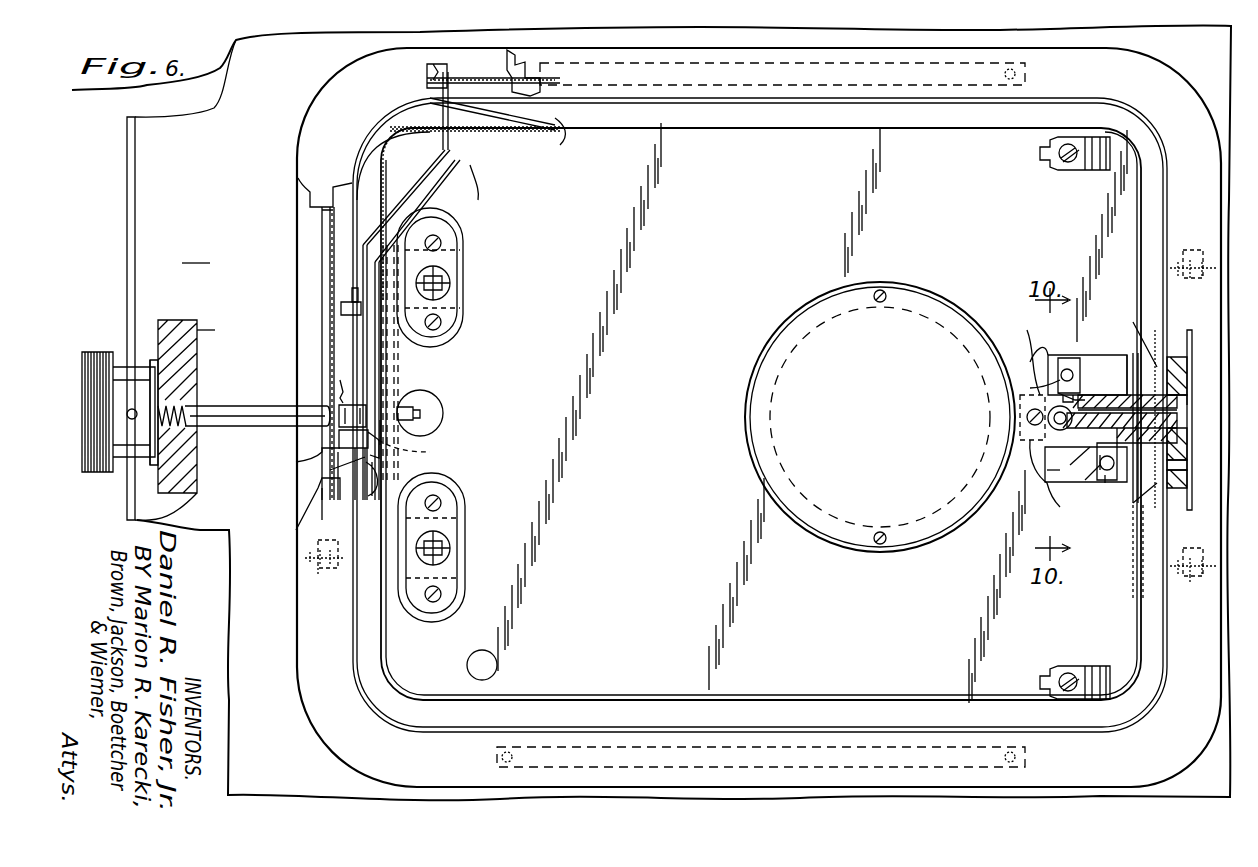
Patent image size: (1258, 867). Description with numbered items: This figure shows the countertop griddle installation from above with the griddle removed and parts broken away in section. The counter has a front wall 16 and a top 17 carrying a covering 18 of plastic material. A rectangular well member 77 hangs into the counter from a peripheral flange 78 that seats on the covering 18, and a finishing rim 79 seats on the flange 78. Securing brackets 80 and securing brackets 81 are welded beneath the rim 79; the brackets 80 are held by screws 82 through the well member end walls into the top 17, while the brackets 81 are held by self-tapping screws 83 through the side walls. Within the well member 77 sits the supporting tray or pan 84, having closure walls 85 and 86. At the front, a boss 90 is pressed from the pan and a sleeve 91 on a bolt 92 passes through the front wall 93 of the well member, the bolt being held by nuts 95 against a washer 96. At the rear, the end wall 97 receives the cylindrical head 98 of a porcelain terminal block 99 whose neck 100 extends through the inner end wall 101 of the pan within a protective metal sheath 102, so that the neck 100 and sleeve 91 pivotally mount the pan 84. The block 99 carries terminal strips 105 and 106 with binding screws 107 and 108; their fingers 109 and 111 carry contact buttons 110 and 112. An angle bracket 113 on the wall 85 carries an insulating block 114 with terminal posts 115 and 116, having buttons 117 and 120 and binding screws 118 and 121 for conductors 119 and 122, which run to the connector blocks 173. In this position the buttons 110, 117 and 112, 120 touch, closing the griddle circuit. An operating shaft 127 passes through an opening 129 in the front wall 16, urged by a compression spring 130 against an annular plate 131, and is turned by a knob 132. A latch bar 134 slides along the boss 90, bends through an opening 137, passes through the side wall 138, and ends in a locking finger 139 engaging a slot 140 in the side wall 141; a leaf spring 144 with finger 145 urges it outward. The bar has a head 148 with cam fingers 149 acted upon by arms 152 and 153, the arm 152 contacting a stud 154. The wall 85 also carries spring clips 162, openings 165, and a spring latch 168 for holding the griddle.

The front wall 16 is at (198, 460).
The top 17 is at (118, 214).
The covering 18 is at (196, 251).
The well member 77 is at (324, 385).
The peripheral flange 78 is at (308, 198).
The finishing rim 79 is at (298, 148).
The securing brackets 80 is at (328, 576).
The securing brackets 81 is at (1028, 79).
The screws 82 is at (312, 548).
The self-tapping screws 83 is at (540, 92).
The supporting tray or pan 84 is at (383, 128).
The closure wall 85 is at (532, 178).
The closure wall 86 is at (490, 192).
The boss 90 is at (392, 377).
The sleeve 91 is at (340, 400).
The bolt 92 is at (420, 413).
The front wall 93 is at (336, 430).
The nuts 95 is at (430, 428).
The washer 96 is at (426, 449).
The end wall 97 is at (1140, 520).
The cylindrical head 98 is at (1190, 478).
The porcelain terminal block 99 is at (1190, 360).
The neck 100 is at (1120, 355).
The inner end wall 101 is at (1135, 503).
The protective metal sheath 102 is at (1110, 340).
The terminal strip 105 is at (1190, 400).
The terminal strip 106 is at (1190, 430).
The binding screw 107 is at (1190, 385).
The binding screw 108 is at (1190, 460).
The finger 109 is at (1078, 398).
The contact button 110 is at (1075, 408).
The finger 111 is at (1110, 480).
The contact button 112 is at (1086, 462).
The angle bracket 113 is at (1020, 441).
The block 114 is at (1050, 472).
The terminal post 115 is at (1040, 360).
The terminal post 116 is at (1070, 466).
The button 117 is at (1030, 381).
The binding screw 118 is at (1087, 364).
The conductor 119 is at (1060, 356).
The contact button 120 is at (1102, 470).
The binding screw 121 is at (1106, 484).
The conductor 122 is at (1087, 480).
The operating shaft 127 is at (234, 408).
The opening 129 is at (197, 372).
The compression spring 130 is at (197, 437).
The annular plate 131 is at (160, 470).
The knob 132 is at (103, 474).
The latch bar 134 is at (362, 262).
The opening 137 is at (358, 178).
The side wall 138 is at (505, 132).
The locking finger 139 is at (428, 66).
The slot 140 is at (448, 84).
The side wall 141 is at (470, 78).
The leaf spring 144 is at (540, 118).
The finger 145 is at (430, 92).
The head 148 is at (355, 470).
The cam finger 149 is at (320, 468).
The arm 152 is at (348, 325).
The arm 153 is at (343, 393).
The stud 154 is at (352, 300).
The spring clip 162 is at (1100, 170).
The opening 165 is at (487, 660).
The spring latch 168 is at (365, 502).
The connector block 173 is at (455, 220).